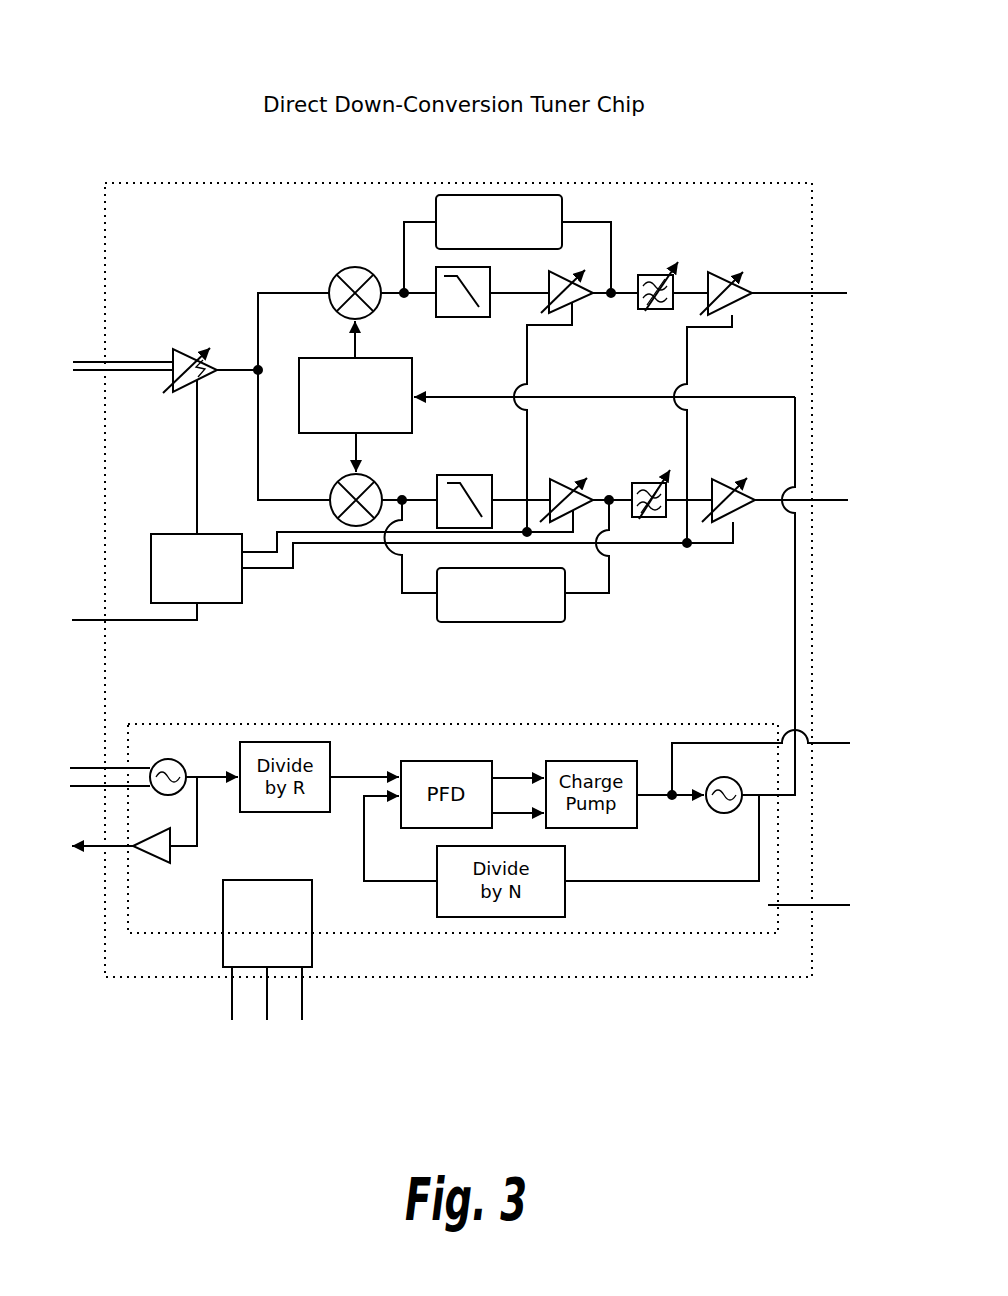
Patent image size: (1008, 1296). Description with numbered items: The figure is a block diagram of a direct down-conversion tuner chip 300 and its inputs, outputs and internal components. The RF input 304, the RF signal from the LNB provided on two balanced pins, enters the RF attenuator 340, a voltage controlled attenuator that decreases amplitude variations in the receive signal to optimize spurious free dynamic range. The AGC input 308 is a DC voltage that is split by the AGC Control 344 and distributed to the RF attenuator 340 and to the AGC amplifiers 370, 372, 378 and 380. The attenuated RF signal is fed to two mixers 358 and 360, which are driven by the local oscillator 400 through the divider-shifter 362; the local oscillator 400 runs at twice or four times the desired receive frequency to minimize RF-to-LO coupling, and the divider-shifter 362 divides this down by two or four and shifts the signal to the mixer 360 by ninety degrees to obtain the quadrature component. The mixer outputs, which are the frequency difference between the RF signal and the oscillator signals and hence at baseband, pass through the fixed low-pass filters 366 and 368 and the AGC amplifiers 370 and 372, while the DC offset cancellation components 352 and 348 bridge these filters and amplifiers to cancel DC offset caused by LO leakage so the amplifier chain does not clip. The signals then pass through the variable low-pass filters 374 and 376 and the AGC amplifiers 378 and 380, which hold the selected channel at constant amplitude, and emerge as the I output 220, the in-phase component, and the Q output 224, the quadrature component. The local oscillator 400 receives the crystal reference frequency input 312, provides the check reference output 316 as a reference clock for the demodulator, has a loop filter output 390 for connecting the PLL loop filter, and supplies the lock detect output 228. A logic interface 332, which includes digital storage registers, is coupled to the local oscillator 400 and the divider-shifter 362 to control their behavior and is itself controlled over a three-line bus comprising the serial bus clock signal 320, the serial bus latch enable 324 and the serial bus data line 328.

The direct down-conversion tuner chip 300 is at (275, 43).
The RF input 304 is at (101, 368).
The automatic gain control (AGC) input 308 is at (113, 618).
The crystal reference frequency input 312 is at (131, 777).
The check reference output 316 is at (111, 820).
The serial bus clock signal 320 is at (223, 1007).
The serial bus latch enable 324 is at (272, 1007).
The serial bus data line 328 is at (320, 1007).
The logic interface 332 is at (267, 923).
The RF attenuator 340 is at (201, 352).
The AGC Control 344 is at (223, 603).
The DC offset cancellation component 348 is at (498, 622).
The DC offset cancellation component 352 is at (498, 193).
The mixer 358 is at (357, 266).
The mixer 360 is at (352, 472).
The 2/4 divider-shifter 362 is at (547, 396).
The fixed low-pass filter 366 is at (487, 318).
The fixed low-pass filter 368 is at (488, 475).
The AGC amplifier 370 is at (586, 298).
The AGC amplifier 372 is at (550, 480).
The variable low-pass filter 374 is at (667, 313).
The variable low-pass filter 376 is at (655, 482).
The AGC amplifier 378 is at (745, 297).
The AGC amplifier 380 is at (712, 480).
The loop filter output 390 is at (783, 596).
The local oscillator 400 is at (312, 725).
The I output 220 is at (818, 297).
The Q output 224 is at (825, 505).
The lock detect output 228 is at (824, 907).